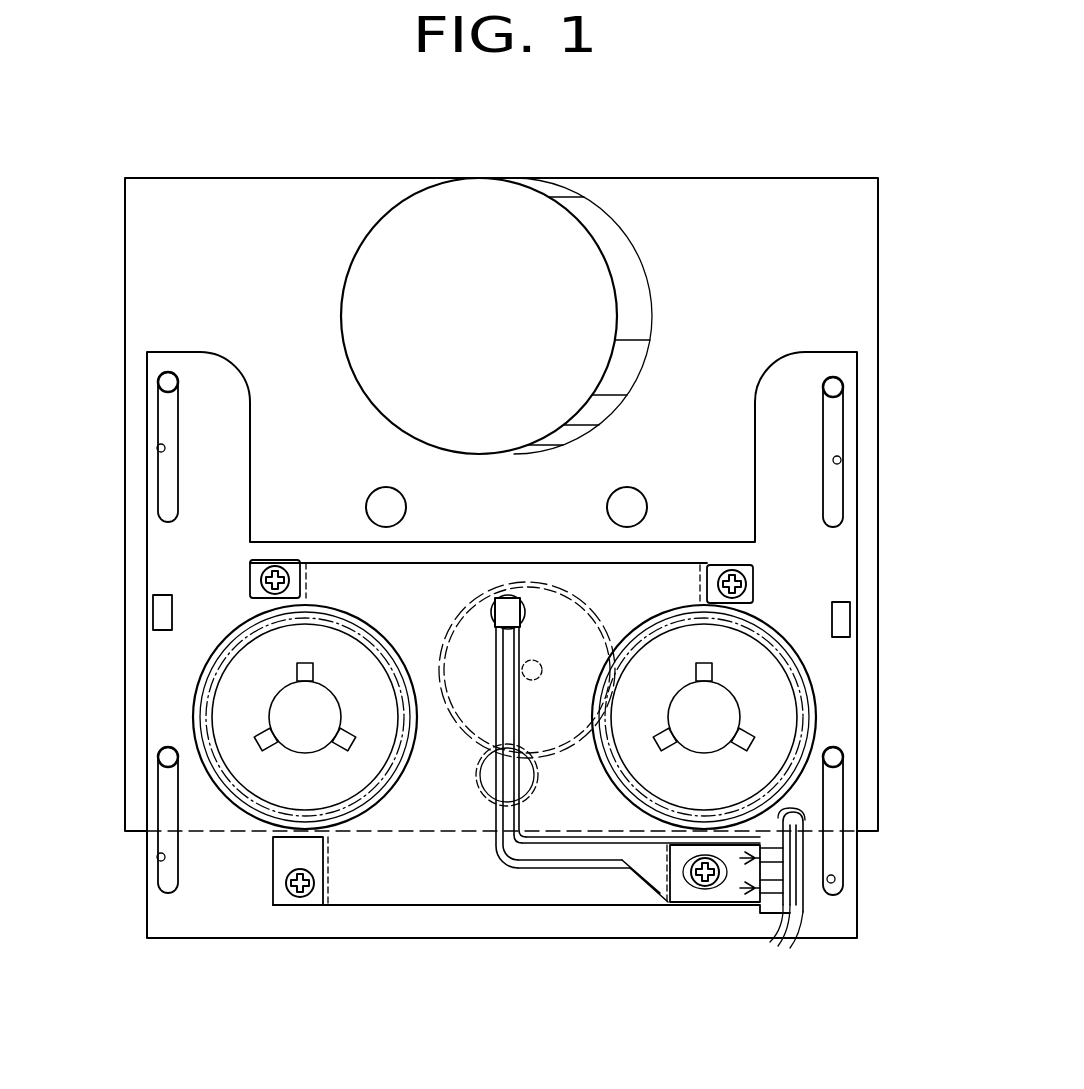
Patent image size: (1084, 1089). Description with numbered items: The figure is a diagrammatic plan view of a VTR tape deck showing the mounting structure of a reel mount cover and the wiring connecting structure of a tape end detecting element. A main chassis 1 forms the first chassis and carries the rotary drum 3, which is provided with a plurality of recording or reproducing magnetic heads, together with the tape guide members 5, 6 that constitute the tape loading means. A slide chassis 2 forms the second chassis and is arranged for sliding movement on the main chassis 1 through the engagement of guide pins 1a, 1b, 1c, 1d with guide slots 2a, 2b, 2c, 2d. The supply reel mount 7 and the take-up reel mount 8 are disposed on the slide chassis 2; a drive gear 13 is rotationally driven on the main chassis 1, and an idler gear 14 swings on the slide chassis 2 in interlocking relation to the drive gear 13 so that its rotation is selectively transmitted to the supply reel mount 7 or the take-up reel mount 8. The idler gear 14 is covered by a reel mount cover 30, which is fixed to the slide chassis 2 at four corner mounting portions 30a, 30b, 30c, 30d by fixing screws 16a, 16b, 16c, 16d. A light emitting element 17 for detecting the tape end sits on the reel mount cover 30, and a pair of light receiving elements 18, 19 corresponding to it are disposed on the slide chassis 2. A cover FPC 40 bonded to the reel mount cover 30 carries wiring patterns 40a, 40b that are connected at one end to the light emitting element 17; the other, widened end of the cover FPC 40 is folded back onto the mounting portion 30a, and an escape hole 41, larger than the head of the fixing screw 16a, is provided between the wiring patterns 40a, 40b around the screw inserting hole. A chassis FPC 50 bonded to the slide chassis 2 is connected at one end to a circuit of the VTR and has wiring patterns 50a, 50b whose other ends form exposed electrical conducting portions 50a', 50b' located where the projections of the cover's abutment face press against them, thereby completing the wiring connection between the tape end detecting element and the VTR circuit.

The main chassis 1 is at (501, 470).
The slide chassis 2 is at (538, 645).
The rotary drum 3 is at (496, 281).
The tape guide member 5 is at (386, 482).
The tape guide member 6 is at (621, 482).
The supply reel mount 7 is at (248, 717).
The take-up reel mount 8 is at (760, 717).
The drive gear 13 is at (474, 872).
The idler gear 14 is at (527, 620).
The light emitting element 17 is at (498, 559).
The light receiving element 18 is at (122, 609).
The light receiving element 19 is at (884, 621).
The reel mount cover 30 is at (520, 781).
The mounting portion 30a is at (702, 919).
The mounting portion 30b is at (710, 539).
The mounting portion 30c is at (289, 919).
The mounting portion 30d is at (296, 532).
The fixing screw 16a is at (705, 929).
The fixing screw 16b is at (735, 539).
The fixing screw 16c is at (313, 935).
The fixing screw 16d is at (272, 533).
The cover FPC 40 is at (513, 813).
The wiring pattern 40a is at (639, 919).
The wiring pattern 40b is at (633, 930).
The escape hole 41 is at (745, 922).
The chassis FPC 50 is at (807, 920).
The wiring pattern 50a is at (863, 809).
The wiring pattern 50b is at (846, 864).
The exposed portion 50a' is at (837, 956).
The exposed portion 50b' is at (785, 954).
The guide pin 1a is at (880, 761).
The guide pin 1b is at (882, 384).
The guide pin 1c is at (125, 751).
The guide pin 1d is at (124, 376).
The guide slot 2a is at (871, 830).
The guide slot 2b is at (882, 452).
The guide slot 2c is at (130, 820).
The guide slot 2d is at (124, 447).